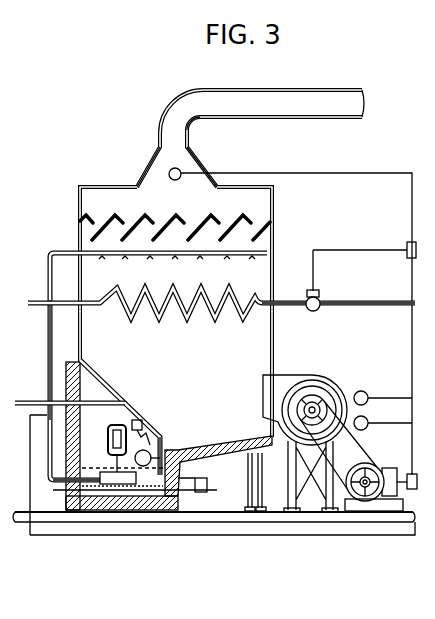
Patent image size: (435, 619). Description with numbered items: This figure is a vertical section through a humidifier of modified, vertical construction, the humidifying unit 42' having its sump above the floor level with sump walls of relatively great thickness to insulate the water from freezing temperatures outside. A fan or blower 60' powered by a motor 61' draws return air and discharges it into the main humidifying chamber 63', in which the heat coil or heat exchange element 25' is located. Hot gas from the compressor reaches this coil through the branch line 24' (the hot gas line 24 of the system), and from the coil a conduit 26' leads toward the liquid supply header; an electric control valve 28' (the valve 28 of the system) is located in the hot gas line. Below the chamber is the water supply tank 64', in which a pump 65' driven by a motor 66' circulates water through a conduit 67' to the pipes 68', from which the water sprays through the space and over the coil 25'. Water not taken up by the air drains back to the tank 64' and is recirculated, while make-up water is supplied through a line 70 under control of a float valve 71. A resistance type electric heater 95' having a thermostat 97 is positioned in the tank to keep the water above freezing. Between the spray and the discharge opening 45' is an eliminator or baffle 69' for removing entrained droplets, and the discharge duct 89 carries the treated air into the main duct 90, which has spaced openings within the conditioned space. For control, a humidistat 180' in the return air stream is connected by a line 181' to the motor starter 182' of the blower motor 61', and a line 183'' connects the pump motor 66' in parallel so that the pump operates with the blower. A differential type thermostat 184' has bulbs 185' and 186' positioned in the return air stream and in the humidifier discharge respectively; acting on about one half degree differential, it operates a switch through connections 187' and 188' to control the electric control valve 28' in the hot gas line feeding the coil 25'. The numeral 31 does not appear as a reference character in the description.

The main duct 90 is at (294, 119).
The discharge duct 89 is at (194, 127).
The discharge opening 45' is at (189, 167).
The humidifying unit 42' is at (207, 312).
The main humidifying chamber 63' is at (151, 447).
The bulb 186' is at (164, 166).
The connection 188' is at (296, 324).
The eliminator or baffle 69' is at (175, 216).
The pipes 68' is at (158, 366).
The conduit 67' is at (30, 360).
The conduit 26' is at (54, 318).
The heat coil or heat exchange element 25' is at (221, 322).
The branch line 24' is at (338, 321).
The electric control valve 28' is at (334, 280).
The differential type thermostat 184' is at (364, 243).
The line 70 is at (36, 378).
The fan or blower 60' is at (309, 438).
The motor 61' is at (353, 456).
The bulb 185' is at (383, 390).
The humidistat 180' is at (383, 417).
The line 181' is at (393, 445).
The connection 187' is at (385, 348).
The motor starter 182' is at (402, 492).
The line 183'' is at (214, 534).
The pump 65' is at (94, 454).
The motor 66' is at (153, 419).
The float valve 71 is at (155, 440).
The water supply tank 64' is at (181, 450).
The resistance type electric heater 95' is at (101, 497).
The thermostat 97 is at (157, 482).
The electric control valve 28 is at (13, 440).
The pipe 31 is at (10, 478).
The branch line 24 is at (11, 562).